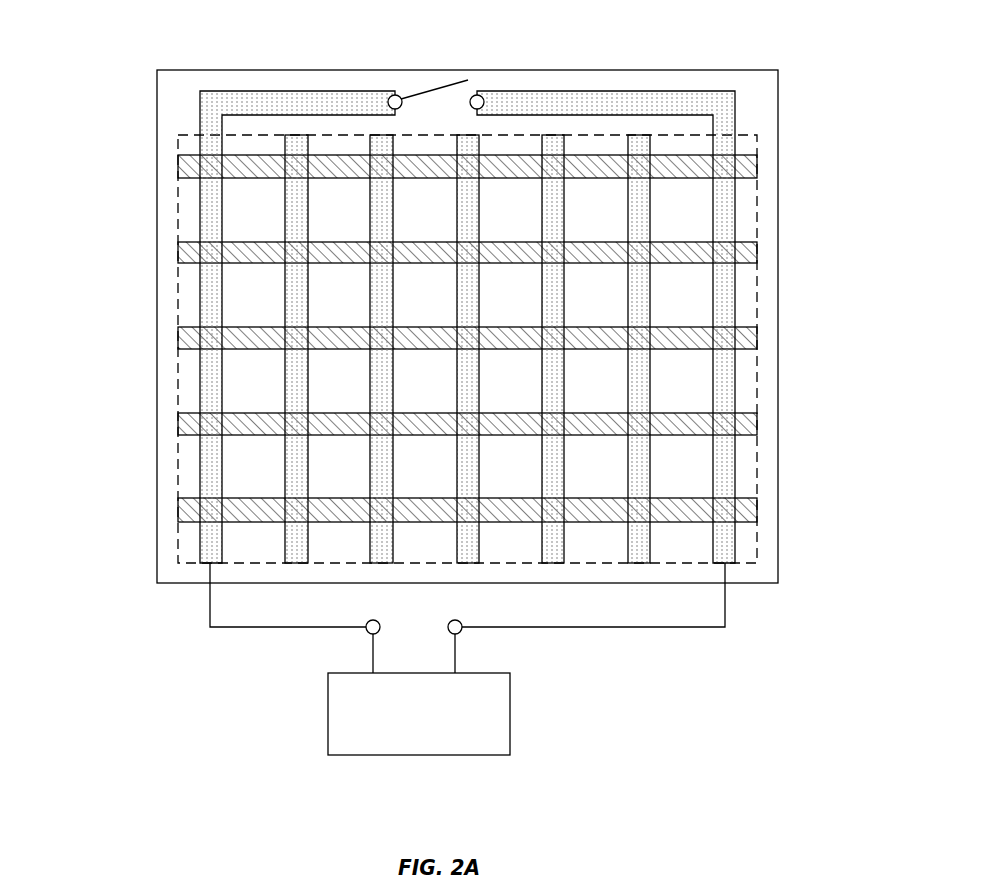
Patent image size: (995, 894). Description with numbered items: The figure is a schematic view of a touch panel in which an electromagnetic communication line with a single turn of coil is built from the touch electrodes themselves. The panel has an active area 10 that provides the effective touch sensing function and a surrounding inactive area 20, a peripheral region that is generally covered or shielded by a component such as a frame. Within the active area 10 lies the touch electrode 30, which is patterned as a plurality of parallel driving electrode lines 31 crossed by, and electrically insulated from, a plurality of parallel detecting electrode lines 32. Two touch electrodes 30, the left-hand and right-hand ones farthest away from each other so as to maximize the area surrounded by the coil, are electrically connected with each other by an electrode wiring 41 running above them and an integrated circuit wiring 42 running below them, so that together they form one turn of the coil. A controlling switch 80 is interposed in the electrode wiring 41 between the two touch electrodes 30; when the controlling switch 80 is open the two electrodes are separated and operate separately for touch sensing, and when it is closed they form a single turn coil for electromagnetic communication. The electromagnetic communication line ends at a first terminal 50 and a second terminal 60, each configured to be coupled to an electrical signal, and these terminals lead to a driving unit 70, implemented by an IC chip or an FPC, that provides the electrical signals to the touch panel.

The active area 10 is at (188, 477).
The inactive area 20 is at (163, 431).
The touch electrode 30 is at (76, 200).
The driving electrode lines 31 is at (426, 294).
The detecting electrode lines 32 is at (182, 262).
The electrode wiring 41 is at (725, 106).
The integrated circuit wiring 42 is at (726, 614).
The first terminal 50 is at (370, 633).
The second terminal 60 is at (457, 634).
The driving unit 70 is at (455, 728).
The controlling switch 80 is at (455, 79).